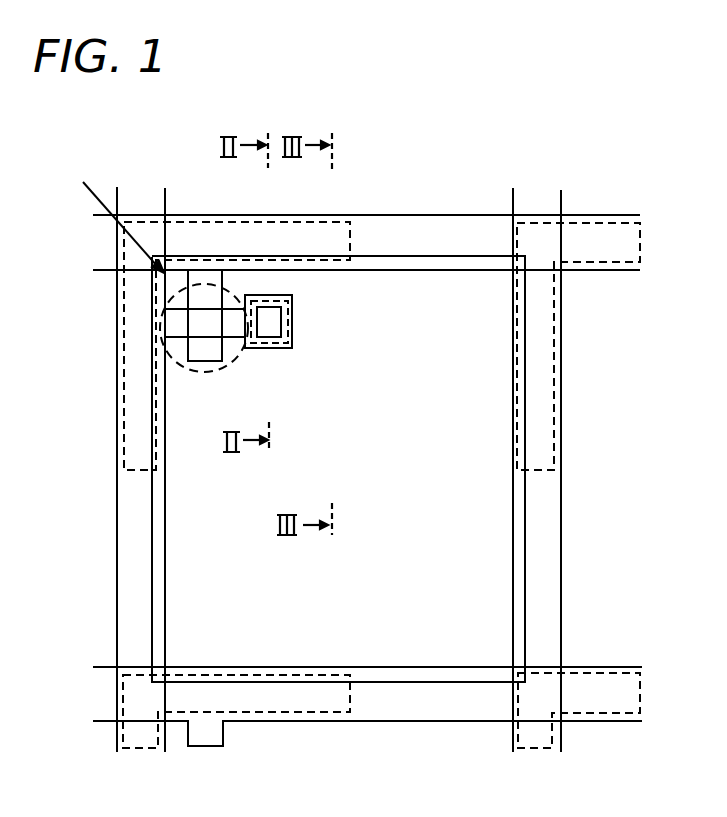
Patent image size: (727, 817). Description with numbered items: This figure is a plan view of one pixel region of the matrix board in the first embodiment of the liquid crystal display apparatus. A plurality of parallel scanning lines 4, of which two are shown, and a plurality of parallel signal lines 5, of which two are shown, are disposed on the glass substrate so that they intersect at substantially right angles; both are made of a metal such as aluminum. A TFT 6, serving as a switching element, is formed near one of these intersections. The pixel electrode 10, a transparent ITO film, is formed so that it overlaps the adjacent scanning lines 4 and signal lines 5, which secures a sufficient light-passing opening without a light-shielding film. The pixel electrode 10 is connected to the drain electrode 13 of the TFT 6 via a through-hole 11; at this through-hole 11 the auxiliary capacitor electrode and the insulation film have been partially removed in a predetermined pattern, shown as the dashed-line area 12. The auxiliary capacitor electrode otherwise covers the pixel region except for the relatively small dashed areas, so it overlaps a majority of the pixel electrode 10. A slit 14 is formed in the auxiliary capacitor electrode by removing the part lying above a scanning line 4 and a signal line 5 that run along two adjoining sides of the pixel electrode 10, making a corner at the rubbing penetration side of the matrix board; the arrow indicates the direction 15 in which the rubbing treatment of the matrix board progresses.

The scanning line 4 is at (615, 213).
The signal line 5 is at (528, 198).
The TFT 6 is at (172, 370).
The pixel electrode 10 is at (528, 550).
The through-hole 11 is at (267, 341).
The removed pattern area 12 is at (286, 350).
The drain electrode 13 is at (266, 295).
The slit 14 is at (355, 248).
The rubbing direction 15 is at (98, 200).